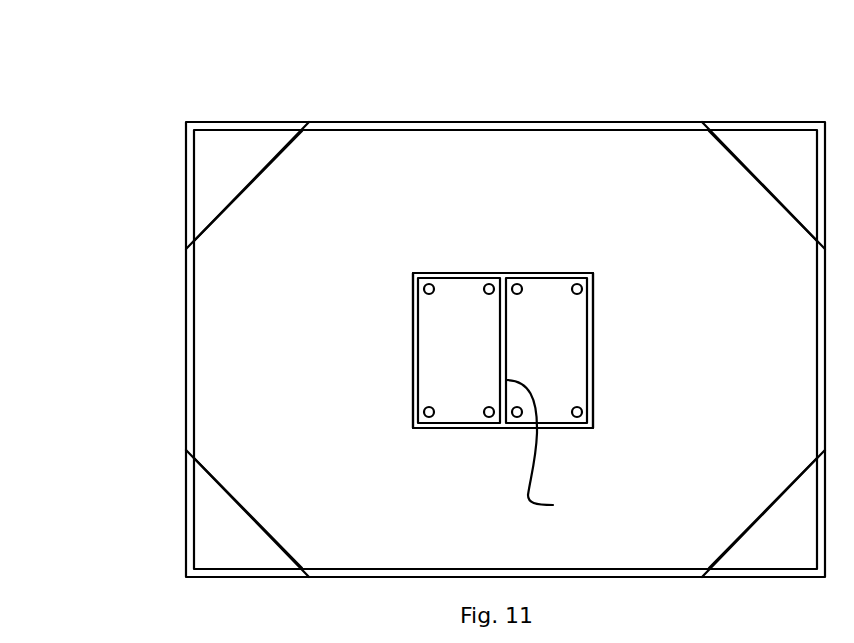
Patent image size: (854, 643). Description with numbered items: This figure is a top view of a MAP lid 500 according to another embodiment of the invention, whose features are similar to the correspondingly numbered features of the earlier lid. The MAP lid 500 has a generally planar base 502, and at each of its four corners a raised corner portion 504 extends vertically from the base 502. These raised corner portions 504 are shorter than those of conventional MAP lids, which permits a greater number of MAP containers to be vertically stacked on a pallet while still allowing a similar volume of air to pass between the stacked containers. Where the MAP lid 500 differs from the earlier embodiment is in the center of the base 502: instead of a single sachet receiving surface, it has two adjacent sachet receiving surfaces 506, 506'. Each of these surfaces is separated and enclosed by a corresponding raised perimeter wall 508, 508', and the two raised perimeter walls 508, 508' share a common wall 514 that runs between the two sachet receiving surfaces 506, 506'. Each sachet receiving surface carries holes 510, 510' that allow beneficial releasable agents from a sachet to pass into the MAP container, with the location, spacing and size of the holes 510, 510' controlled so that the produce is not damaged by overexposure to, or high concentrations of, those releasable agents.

The MAP lid 500 is at (112, 122).
The base 502 is at (523, 227).
The raised corner portions 504 is at (770, 122).
The sachet receiving surface 506 is at (459, 350).
The sachet receiving surface 506' is at (546, 350).
The raised perimeter wall 508 is at (453, 350).
The raised perimeter wall 508' is at (561, 350).
The holes 510 is at (424, 392).
The holes 510' is at (595, 391).
The common wall 514 is at (554, 452).